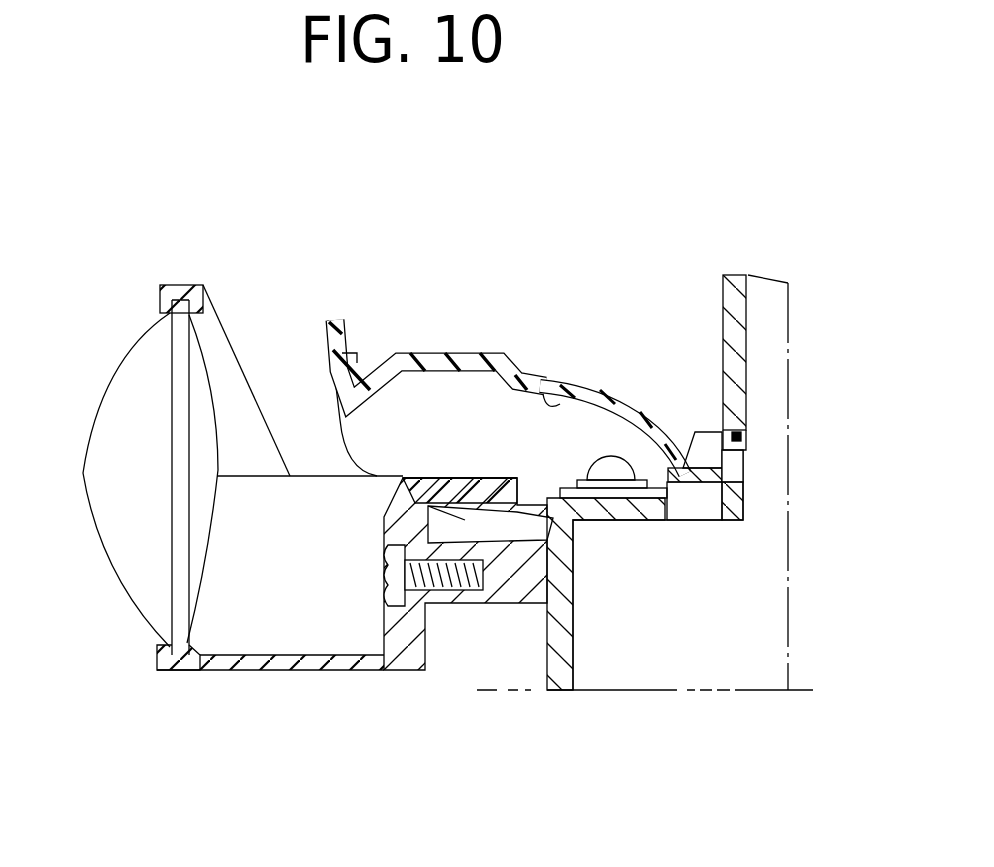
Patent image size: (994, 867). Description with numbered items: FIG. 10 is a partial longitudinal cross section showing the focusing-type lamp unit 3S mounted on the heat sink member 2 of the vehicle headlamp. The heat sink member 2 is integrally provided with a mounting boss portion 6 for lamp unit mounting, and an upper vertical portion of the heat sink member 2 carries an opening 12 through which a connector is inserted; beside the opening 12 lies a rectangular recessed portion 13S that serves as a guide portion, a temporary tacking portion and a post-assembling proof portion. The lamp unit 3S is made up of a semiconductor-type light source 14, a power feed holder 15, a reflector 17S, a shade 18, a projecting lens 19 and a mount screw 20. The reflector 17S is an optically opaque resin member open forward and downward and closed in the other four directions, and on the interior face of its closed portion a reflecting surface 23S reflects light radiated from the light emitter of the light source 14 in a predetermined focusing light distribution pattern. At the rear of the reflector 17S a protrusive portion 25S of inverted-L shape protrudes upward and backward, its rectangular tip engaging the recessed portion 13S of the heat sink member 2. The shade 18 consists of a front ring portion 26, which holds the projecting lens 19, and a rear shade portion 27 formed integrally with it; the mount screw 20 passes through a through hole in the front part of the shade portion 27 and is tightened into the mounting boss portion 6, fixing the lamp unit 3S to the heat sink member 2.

The heat sink member 2 is at (762, 266).
The lamp unit of focusing type 3S is at (306, 256).
The mounting boss portion 6 is at (492, 605).
The opening 12 is at (737, 487).
The recessed portion 13S is at (741, 436).
The semiconductor-type light source 14 is at (608, 456).
The power feed holder 15 is at (683, 512).
The reflector of focusing type 17S is at (428, 340).
The shade 18 is at (457, 465).
The projecting lens 19 is at (122, 368).
The mount screw 20 is at (387, 580).
The reflecting surface 23S is at (543, 380).
The protrusive portion 25S is at (703, 428).
The ring portion 26 is at (157, 660).
The shade portion 27 is at (502, 505).